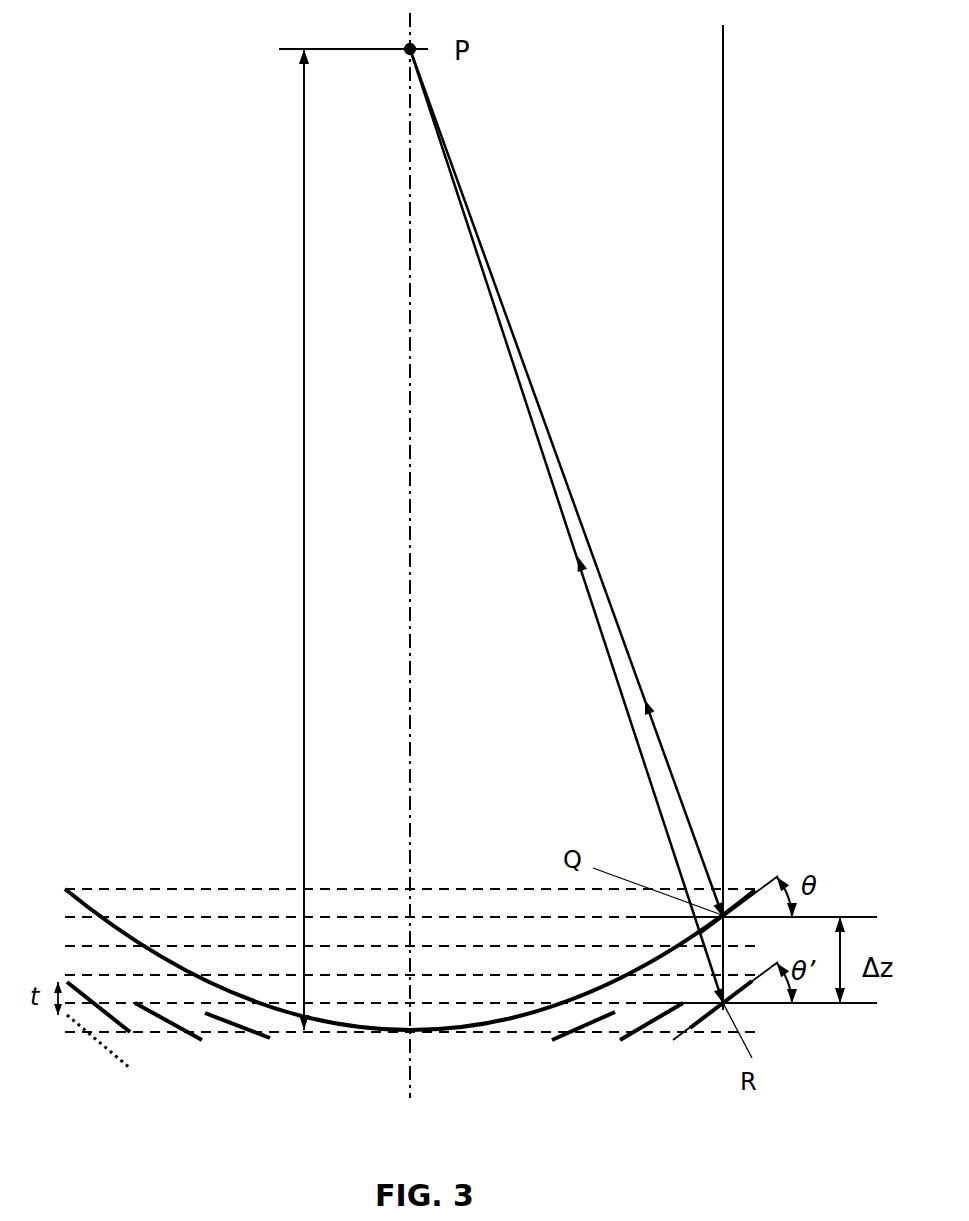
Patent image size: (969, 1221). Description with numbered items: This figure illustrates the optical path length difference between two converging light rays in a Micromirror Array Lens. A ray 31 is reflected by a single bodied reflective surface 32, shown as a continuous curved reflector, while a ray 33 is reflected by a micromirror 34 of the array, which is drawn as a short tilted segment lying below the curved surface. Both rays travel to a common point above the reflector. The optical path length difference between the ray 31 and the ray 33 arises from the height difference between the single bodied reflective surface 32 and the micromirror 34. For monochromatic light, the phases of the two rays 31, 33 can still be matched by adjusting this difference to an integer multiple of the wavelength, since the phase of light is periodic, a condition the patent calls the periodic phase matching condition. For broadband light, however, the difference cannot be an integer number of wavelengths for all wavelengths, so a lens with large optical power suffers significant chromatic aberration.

The ray 31 is at (587, 510).
The single bodied reflective surface 32 is at (98, 898).
The ray 33 is at (587, 617).
The micromirror 34 is at (708, 1030).